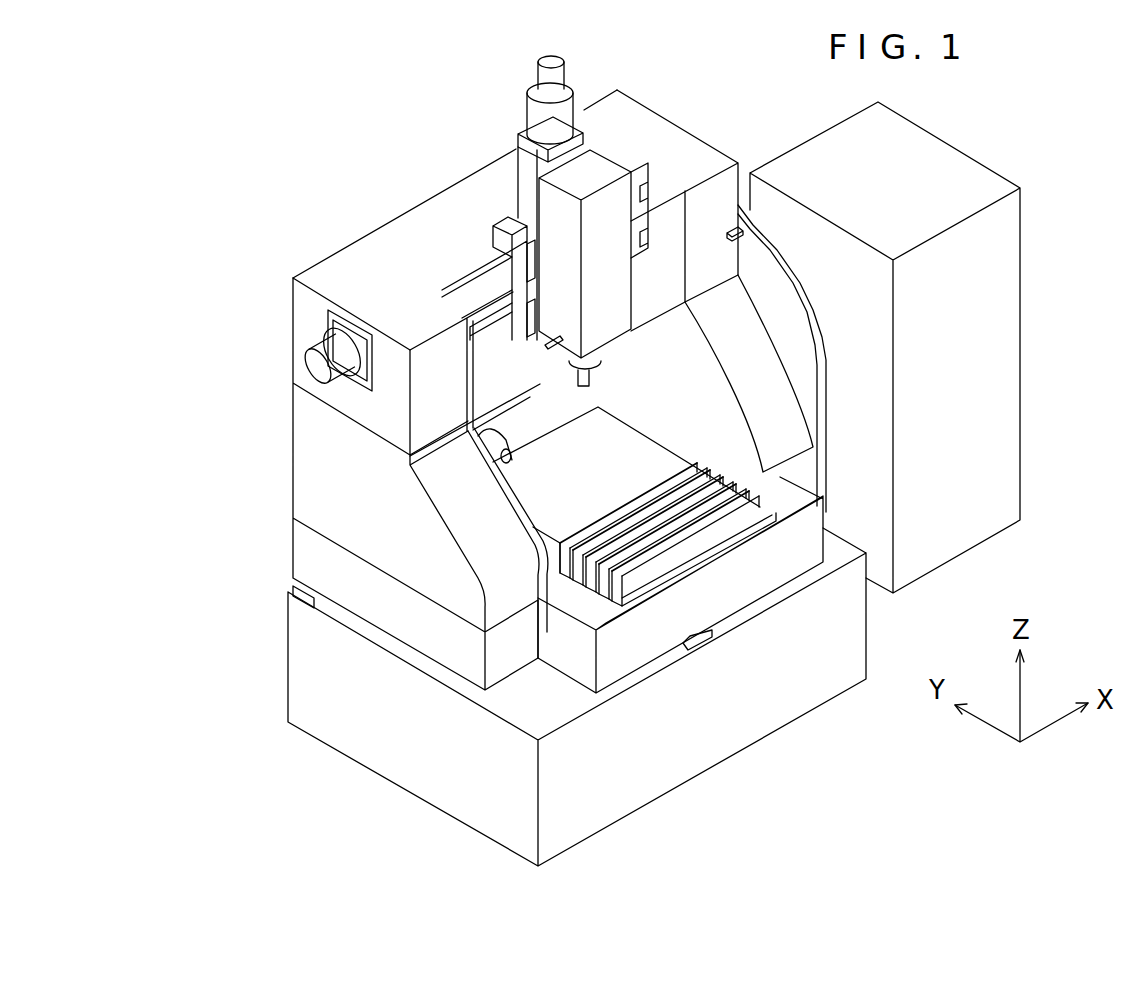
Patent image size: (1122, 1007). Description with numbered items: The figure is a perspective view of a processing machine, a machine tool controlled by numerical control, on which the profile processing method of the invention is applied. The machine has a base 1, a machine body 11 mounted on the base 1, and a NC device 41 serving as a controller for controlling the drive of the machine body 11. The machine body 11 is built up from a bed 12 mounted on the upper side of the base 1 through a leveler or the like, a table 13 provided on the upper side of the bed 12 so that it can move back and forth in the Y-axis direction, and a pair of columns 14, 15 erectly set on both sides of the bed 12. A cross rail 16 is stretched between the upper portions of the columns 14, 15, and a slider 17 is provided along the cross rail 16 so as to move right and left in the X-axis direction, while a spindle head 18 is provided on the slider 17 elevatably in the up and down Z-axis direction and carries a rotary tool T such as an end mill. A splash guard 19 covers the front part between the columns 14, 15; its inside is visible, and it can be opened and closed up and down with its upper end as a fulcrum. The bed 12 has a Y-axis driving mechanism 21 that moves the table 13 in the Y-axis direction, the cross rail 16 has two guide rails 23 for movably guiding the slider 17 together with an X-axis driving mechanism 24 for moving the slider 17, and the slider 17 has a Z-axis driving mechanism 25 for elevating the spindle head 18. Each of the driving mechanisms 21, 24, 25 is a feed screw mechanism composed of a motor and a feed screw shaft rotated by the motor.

The base 1 is at (795, 755).
The machine body 11 is at (727, 142).
The bed 12 is at (747, 590).
The table 13 is at (637, 447).
The column 14 is at (305, 441).
The column 15 is at (747, 310).
The cross rail 16 is at (395, 232).
The slider 17 is at (507, 217).
The spindle head 18 is at (600, 160).
The splash guard 19 is at (800, 322).
The Y-axis driving mechanism 21 is at (500, 447).
The guide rail 23 is at (497, 320).
The X-axis driving mechanism 24 is at (317, 367).
The Z-axis driving mechanism 25 is at (552, 66).
The NC device 41 is at (973, 153).
The rotary tool T is at (597, 383).